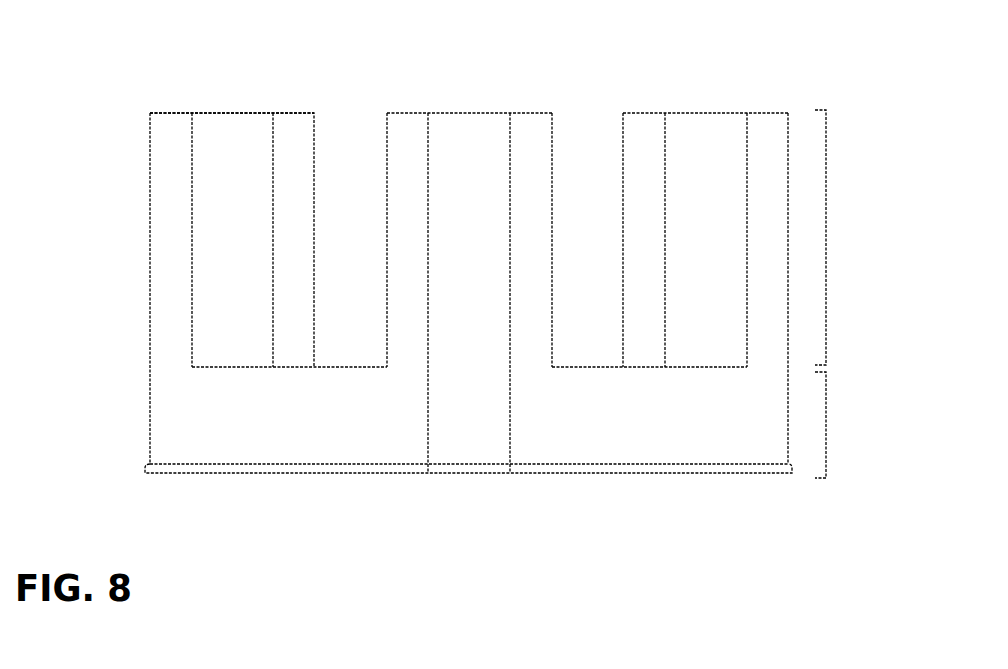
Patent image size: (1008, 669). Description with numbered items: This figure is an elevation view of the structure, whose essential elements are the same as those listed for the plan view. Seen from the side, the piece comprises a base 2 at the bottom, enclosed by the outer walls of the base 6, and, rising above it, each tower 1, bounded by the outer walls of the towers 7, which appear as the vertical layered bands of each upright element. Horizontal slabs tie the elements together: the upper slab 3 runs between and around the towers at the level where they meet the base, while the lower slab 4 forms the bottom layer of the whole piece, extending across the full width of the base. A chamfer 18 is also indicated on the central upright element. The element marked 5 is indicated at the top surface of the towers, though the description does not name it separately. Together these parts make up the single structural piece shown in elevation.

The tower 1 is at (826, 219).
The base 2 is at (826, 418).
The upper slab 3 is at (233, 372).
The lower slab 4 is at (665, 473).
The top surface 5 is at (215, 111).
The outer walls of the base 6 is at (310, 423).
The outer walls of the towers 7 is at (228, 172).
The chamfer 18 is at (468, 155).